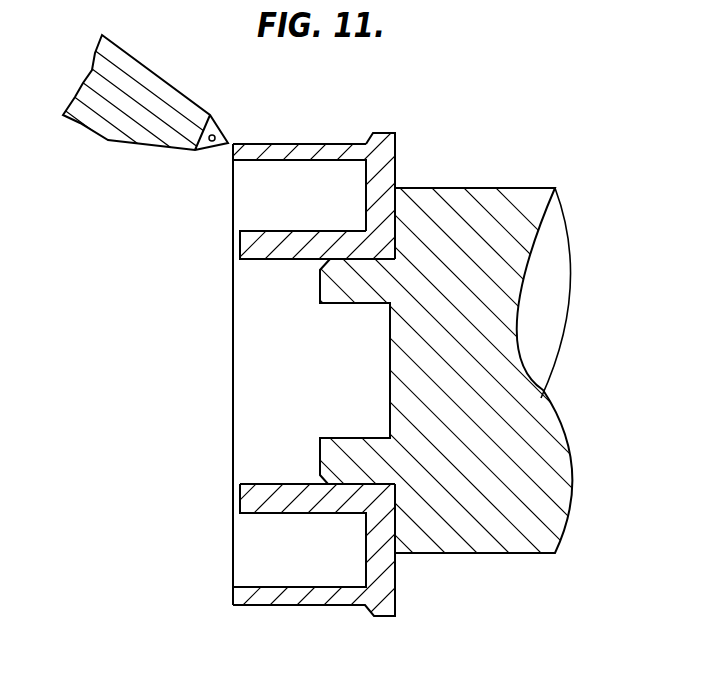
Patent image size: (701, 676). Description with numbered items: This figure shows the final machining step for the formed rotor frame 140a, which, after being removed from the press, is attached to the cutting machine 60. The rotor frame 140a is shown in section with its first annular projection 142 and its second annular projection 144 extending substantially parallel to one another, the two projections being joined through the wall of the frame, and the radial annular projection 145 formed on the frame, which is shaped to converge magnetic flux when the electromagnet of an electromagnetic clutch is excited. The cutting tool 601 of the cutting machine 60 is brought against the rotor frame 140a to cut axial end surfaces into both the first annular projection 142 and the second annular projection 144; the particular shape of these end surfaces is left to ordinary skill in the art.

The cutting machine 60 is at (519, 185).
The cutting tool 601 is at (162, 90).
The rotor frame 140a is at (396, 172).
The first annular projection 142 is at (281, 252).
The second annular projection 144 is at (298, 143).
The radial annular projection 145 is at (384, 139).